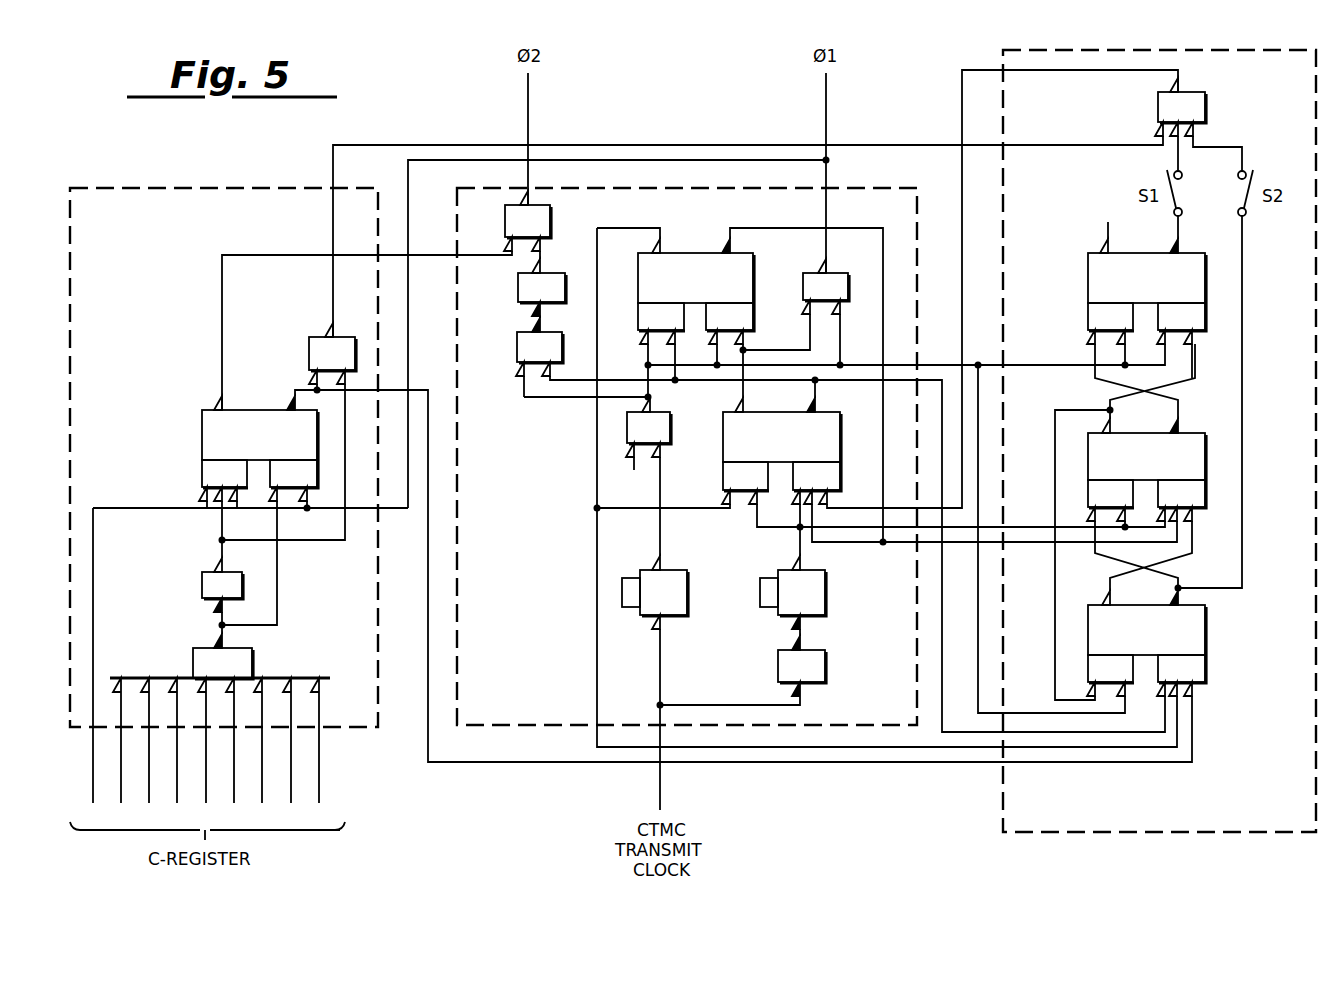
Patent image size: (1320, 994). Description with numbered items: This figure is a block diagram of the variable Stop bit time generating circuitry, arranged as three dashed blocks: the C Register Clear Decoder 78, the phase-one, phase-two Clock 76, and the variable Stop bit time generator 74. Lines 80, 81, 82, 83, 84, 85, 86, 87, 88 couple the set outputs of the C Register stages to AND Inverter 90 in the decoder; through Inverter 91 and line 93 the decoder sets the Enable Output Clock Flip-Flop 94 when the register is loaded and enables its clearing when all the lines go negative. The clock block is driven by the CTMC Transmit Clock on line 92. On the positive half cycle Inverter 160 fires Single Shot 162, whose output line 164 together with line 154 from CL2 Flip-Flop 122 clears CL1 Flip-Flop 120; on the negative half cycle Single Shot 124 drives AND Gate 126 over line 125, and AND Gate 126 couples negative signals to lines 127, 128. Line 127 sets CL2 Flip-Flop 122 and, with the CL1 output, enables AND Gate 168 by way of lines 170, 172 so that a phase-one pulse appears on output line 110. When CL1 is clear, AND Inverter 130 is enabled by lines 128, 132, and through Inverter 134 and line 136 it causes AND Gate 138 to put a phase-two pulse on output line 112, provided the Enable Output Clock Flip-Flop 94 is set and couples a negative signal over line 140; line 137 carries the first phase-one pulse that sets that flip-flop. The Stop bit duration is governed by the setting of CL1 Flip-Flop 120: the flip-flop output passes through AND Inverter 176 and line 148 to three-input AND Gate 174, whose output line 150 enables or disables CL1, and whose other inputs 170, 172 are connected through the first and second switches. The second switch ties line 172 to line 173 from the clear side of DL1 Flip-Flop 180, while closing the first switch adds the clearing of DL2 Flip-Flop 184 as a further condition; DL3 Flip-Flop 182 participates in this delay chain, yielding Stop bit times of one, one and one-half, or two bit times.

The variable Stop bit time generator 74 is at (1078, 832).
The Ø1, Ø2 Clock 76 is at (515, 727).
The C Register Clear Decoder 78 is at (138, 187).
The line 80 is at (94, 778).
The line 81 is at (292, 801).
The line 82 is at (263, 778).
The line 83 is at (235, 801).
The line 84 is at (207, 778).
The line 85 is at (178, 801).
The line 86 is at (150, 778).
The line 87 is at (122, 801).
The line 88 is at (320, 778).
The AND Inverter 90 is at (210, 648).
The Inverter 91 is at (202, 583).
The line 92 is at (662, 787).
The line 93 is at (220, 548).
The Enable Output Clock (EOC) Flip-Flop 94 is at (202, 430).
The output line 110 is at (826, 100).
The output line 112 is at (528, 100).
The CL1 Flip-Flop 120 is at (798, 412).
The CL2 Flip-Flop 122 is at (690, 252).
The Single Shot 124 is at (690, 590).
The output line 125 is at (663, 533).
The AND Gate 126 is at (665, 412).
The line 127 is at (647, 372).
The line 128 is at (522, 383).
The AND Inverter 130 is at (517, 342).
The line 132 is at (568, 398).
The Inverter 134 is at (518, 285).
The line 136 is at (543, 258).
The line 137 is at (613, 160).
The AND Gate 138 is at (550, 212).
The line 140 is at (222, 292).
The line 148 is at (707, 160).
The line 150 is at (1048, 70).
The line 154 is at (595, 487).
The Inverter 160 is at (828, 666).
The Single Shot 162 is at (828, 590).
The output line 164 is at (798, 550).
The AND Gate 168 is at (815, 272).
The line 170 is at (798, 335).
The line 172 is at (1216, 147).
The line 173 is at (1242, 350).
The AND Gate 174 is at (1194, 93).
The AND Inverter 176 is at (312, 340).
The DL1 Flip-Flop 180 is at (1207, 628).
The DL3 Flip-Flop 182 is at (1195, 433).
The DL2 Flip-Flop 184 is at (1088, 268).